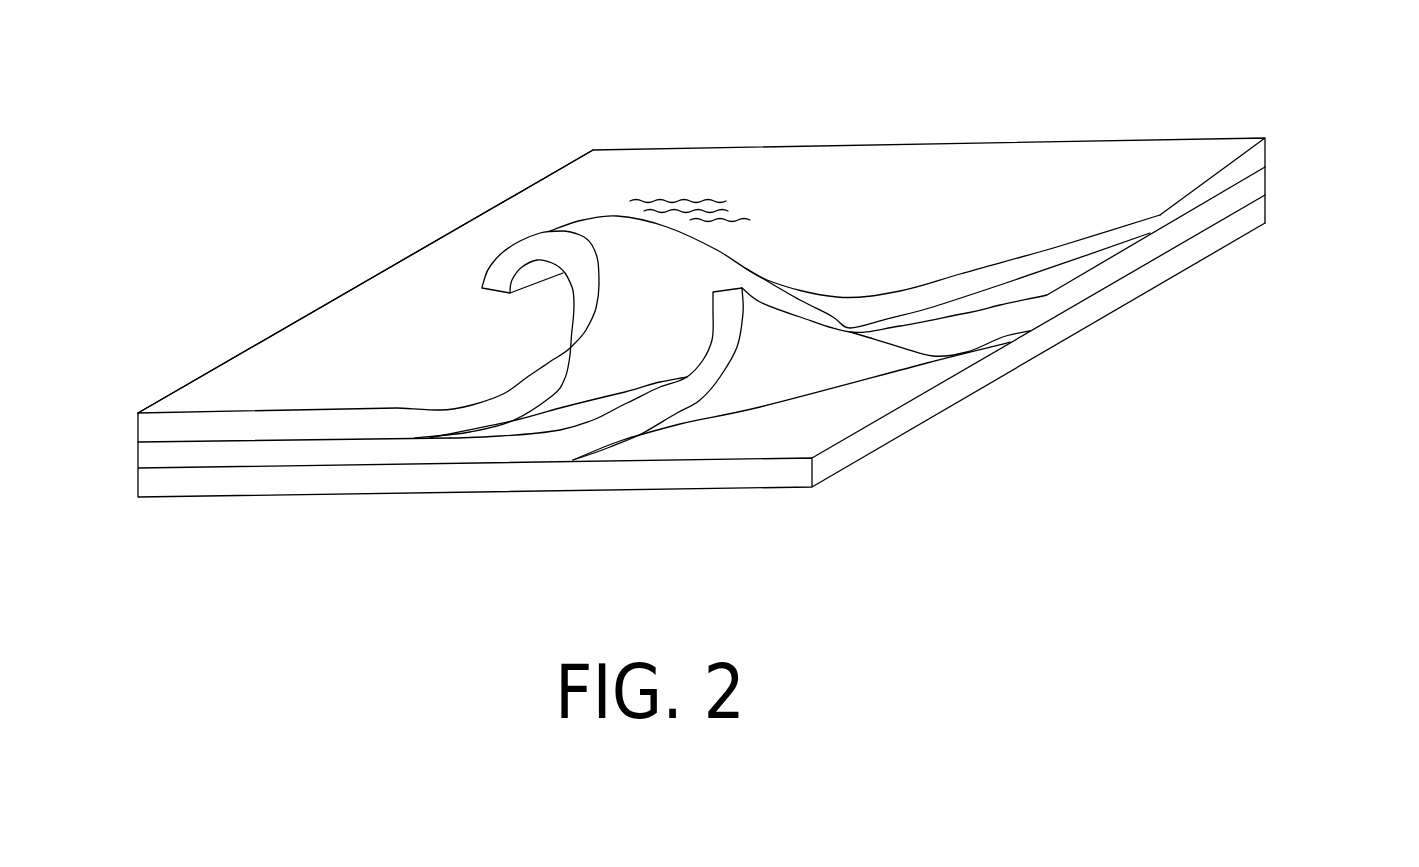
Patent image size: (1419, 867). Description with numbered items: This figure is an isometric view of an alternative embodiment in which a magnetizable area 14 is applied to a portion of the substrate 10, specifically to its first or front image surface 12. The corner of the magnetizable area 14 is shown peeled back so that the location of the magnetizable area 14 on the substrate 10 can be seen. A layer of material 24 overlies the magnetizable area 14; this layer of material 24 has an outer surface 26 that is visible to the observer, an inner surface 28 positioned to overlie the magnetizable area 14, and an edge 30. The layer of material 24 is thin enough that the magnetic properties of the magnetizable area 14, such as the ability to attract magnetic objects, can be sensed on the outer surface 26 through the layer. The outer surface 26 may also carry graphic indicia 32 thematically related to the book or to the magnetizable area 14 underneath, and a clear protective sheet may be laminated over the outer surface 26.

The substrate 10 is at (778, 312).
The first or front image surface 12 is at (797, 430).
The magnetizable area 14 is at (683, 392).
The layer of material 24 is at (884, 180).
The outer surface 26 is at (340, 345).
The inner surface 28 is at (640, 320).
The edge 30 is at (374, 422).
The graphic indicia 32 is at (692, 190).